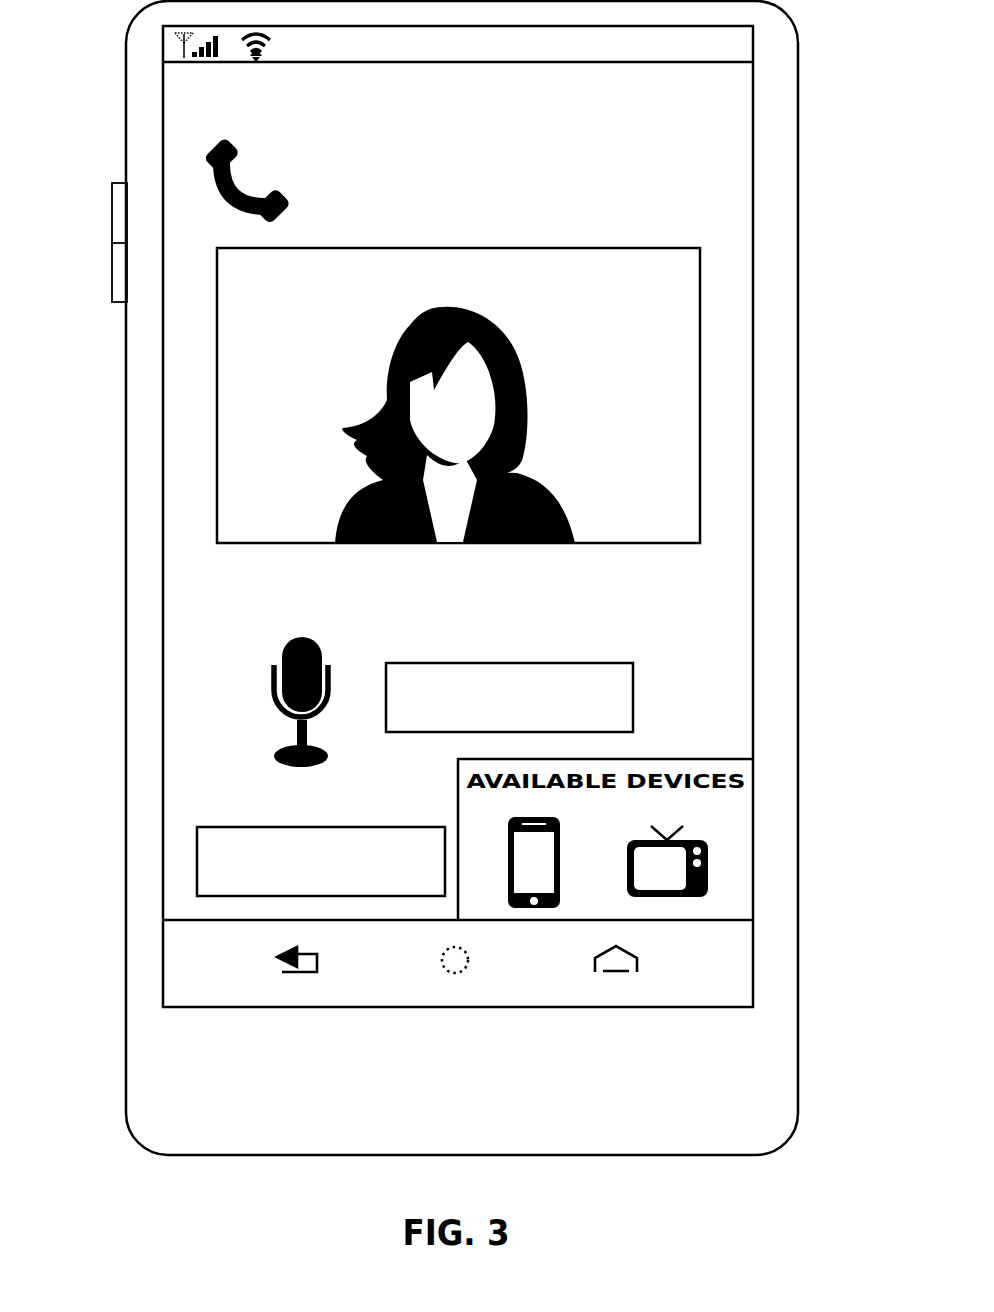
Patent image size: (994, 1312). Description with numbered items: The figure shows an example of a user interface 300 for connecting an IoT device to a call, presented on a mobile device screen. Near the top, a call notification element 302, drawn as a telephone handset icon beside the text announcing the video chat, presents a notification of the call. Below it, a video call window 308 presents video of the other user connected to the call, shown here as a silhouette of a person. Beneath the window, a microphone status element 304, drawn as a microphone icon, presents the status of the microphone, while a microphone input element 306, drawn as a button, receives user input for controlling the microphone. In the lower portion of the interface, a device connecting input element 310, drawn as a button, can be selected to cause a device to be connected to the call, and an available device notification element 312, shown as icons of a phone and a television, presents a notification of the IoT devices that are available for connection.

The user interface 300 is at (438, 119).
The call notification element 302 is at (190, 190).
The microphone status element 304 is at (343, 650).
The microphone input element 306 is at (633, 692).
The video call window 308 is at (217, 388).
The device connecting input element 310 is at (197, 849).
The available device notification element 312 is at (739, 848).